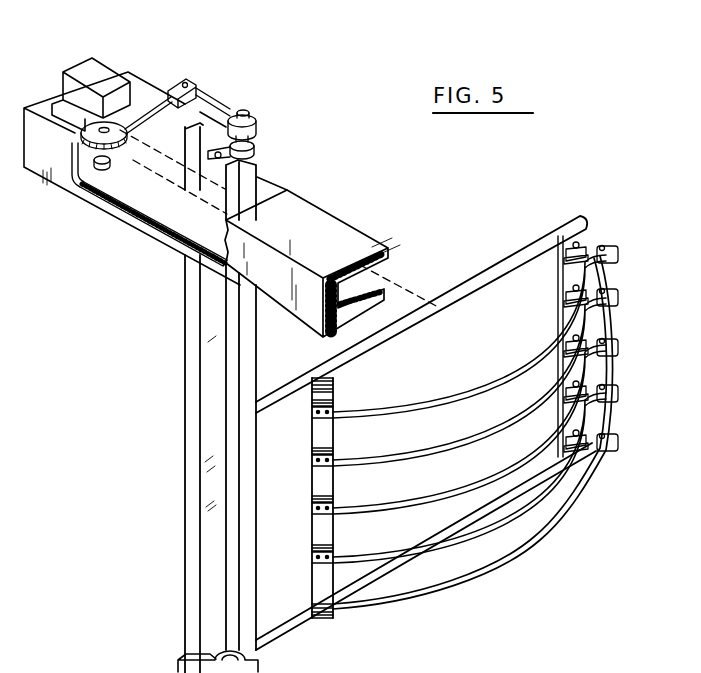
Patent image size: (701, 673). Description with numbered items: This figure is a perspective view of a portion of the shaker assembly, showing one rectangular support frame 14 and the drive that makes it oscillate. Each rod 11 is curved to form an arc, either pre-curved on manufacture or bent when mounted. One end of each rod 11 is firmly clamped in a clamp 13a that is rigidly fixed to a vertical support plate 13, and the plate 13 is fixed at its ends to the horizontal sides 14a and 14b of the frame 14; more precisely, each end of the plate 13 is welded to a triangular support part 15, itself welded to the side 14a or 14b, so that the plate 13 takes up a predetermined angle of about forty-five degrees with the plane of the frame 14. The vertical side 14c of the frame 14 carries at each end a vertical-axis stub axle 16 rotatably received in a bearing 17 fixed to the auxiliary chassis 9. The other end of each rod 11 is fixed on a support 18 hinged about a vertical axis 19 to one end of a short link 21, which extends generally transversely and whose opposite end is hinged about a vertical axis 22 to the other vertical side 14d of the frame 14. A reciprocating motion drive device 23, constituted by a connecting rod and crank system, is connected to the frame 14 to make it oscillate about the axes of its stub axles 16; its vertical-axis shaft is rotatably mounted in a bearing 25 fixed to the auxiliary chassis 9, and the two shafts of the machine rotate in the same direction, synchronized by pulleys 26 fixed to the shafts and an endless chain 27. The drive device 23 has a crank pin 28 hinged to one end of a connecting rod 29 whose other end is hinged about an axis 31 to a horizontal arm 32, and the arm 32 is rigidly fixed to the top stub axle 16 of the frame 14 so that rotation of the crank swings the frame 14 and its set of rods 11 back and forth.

The auxiliary chassis 9 is at (184, 285).
The rod 11 is at (487, 398).
The vertical support plate 13 is at (327, 512).
The clamp 13a is at (315, 462).
The rectangular support frame 14 is at (419, 405).
The horizontal side of the frame 14a is at (447, 298).
The horizontal side of the frame 14b is at (372, 573).
The vertical side of the frame 14c is at (244, 517).
The other vertical side of the frame 14d is at (570, 373).
The support part 15 is at (335, 374).
The stub axle 16 is at (246, 110).
The bearing 17 is at (255, 148).
The support 18 is at (621, 303).
The vertical axis 19 is at (613, 250).
The short link 21 is at (589, 245).
The vertical axis 22 is at (572, 244).
The reciprocating motion drive device 23 is at (232, 342).
The bearing 25 is at (90, 72).
The pulley 26 is at (72, 153).
The endless chain 27 is at (205, 207).
The crank pin 28 is at (100, 166).
The connecting rod 29 is at (160, 120).
The axis 31 is at (193, 77).
The horizontal arm 32 is at (215, 100).